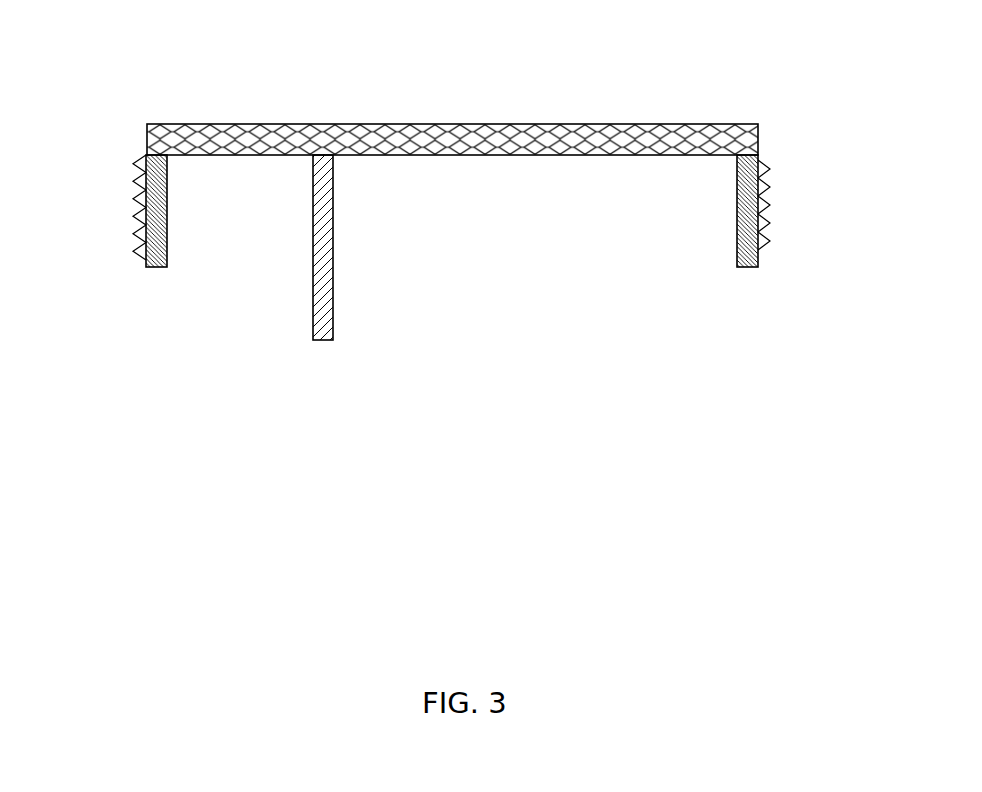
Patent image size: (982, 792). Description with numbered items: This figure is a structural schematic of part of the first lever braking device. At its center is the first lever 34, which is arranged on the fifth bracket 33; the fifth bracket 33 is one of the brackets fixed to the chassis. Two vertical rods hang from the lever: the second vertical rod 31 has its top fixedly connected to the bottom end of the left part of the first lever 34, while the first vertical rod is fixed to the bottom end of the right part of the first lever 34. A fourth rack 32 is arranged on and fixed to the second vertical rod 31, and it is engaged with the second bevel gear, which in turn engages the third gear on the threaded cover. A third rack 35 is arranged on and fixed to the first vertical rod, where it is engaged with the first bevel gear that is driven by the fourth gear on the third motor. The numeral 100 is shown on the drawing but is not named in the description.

The first lever 34 is at (633, 123).
The second vertical rod 31 is at (143, 270).
The fourth rack 32 is at (129, 192).
The fifth bracket 33 is at (309, 344).
The third rack 35 is at (770, 193).
The right side wall 100 is at (760, 270).